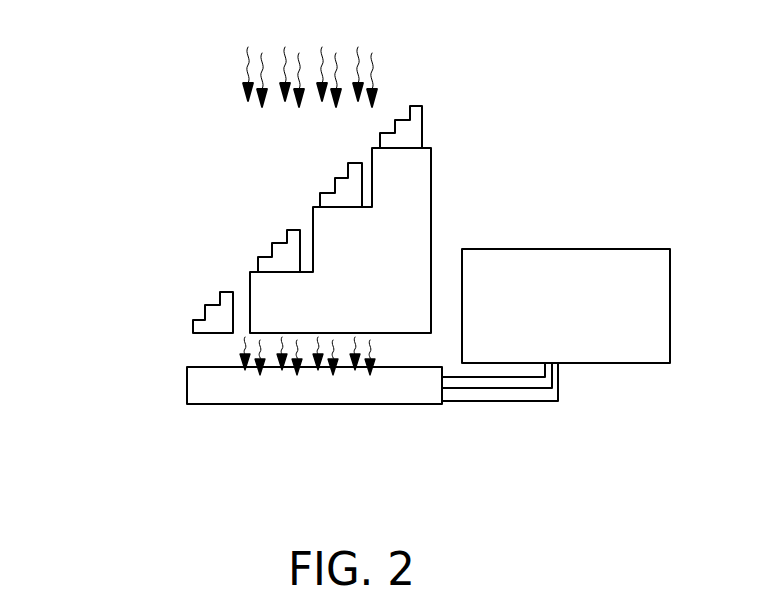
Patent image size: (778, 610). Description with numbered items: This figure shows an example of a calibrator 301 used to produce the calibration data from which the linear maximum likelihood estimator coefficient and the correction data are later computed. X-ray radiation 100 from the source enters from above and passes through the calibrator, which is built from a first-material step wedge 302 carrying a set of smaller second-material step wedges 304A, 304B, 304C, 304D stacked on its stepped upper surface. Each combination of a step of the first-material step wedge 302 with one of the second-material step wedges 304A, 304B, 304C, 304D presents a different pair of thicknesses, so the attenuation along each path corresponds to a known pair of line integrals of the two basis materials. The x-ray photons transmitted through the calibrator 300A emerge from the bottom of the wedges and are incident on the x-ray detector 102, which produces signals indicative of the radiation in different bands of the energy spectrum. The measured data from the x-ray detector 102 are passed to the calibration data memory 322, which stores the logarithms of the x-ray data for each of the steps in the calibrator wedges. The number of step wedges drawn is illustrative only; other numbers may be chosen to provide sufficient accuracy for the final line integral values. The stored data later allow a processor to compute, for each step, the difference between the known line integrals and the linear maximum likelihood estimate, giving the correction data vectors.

The x-ray radiation 100 is at (229, 80).
The calibrator 301 is at (140, 182).
The material 1 step wedge 302 is at (431, 188).
The material 2 step wedge 304A is at (423, 107).
The material 2 step wedge 304B is at (332, 180).
The material 2 step wedge 304C is at (260, 247).
The material 2 step wedge 304D is at (197, 308).
The x-ray photons transmitted through calibrator 300A is at (233, 358).
The x-ray detector 102 is at (313, 408).
The calibration data memory 322 is at (632, 370).